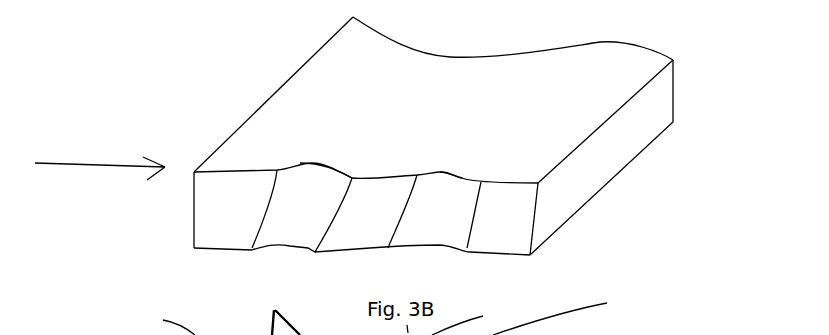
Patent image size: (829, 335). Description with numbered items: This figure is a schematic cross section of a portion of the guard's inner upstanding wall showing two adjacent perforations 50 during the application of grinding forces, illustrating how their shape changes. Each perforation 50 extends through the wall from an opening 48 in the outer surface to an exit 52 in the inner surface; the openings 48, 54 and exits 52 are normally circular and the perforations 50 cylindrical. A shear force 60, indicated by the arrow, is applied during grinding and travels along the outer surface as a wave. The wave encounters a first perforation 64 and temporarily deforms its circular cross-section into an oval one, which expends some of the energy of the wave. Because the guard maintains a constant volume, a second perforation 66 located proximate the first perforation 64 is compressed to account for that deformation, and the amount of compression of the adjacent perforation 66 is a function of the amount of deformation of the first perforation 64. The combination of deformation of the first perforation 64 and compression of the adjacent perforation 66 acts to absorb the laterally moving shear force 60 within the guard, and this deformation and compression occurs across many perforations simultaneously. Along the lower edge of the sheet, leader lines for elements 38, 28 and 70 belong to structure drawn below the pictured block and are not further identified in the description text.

The shear force 60 is at (100, 161).
The perforations 50 is at (295, 178).
The exits 52 is at (458, 173).
The first perforation 64 is at (285, 202).
The second perforation 66 is at (450, 213).
The openings 48 is at (280, 243).
The element 38 is at (160, 323).
The openings 54 is at (275, 313).
The element 28 is at (472, 317).
The element 70 is at (565, 315).